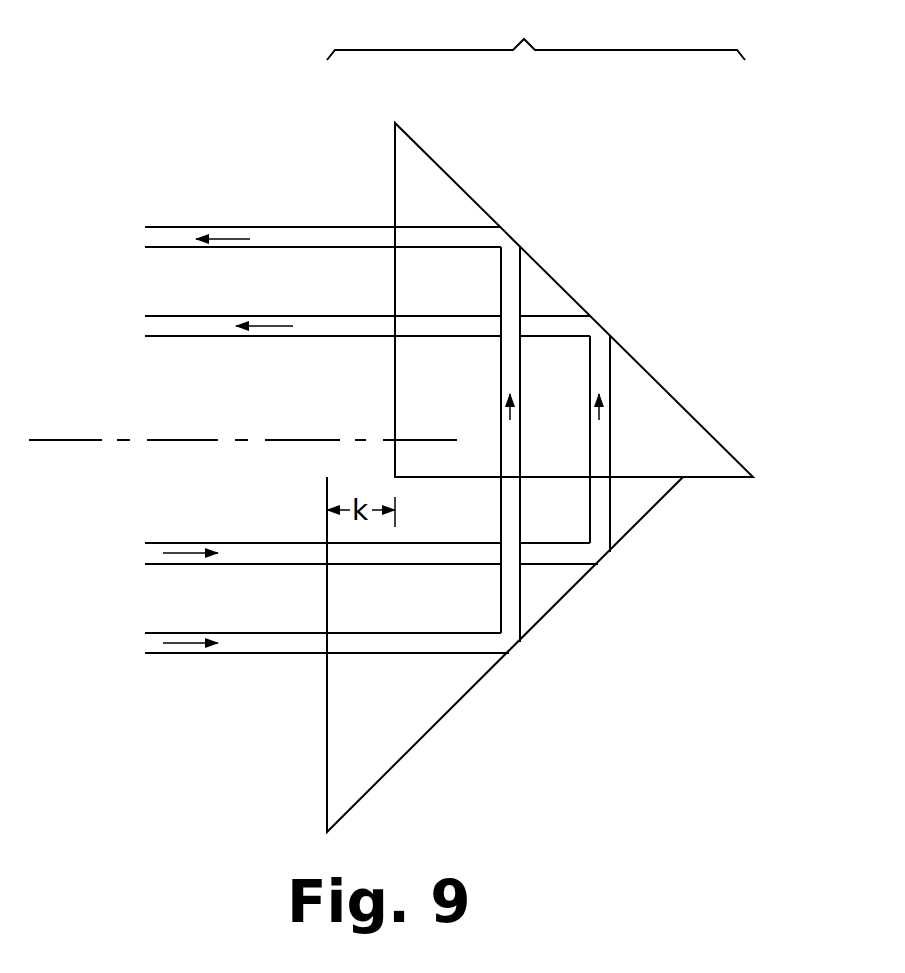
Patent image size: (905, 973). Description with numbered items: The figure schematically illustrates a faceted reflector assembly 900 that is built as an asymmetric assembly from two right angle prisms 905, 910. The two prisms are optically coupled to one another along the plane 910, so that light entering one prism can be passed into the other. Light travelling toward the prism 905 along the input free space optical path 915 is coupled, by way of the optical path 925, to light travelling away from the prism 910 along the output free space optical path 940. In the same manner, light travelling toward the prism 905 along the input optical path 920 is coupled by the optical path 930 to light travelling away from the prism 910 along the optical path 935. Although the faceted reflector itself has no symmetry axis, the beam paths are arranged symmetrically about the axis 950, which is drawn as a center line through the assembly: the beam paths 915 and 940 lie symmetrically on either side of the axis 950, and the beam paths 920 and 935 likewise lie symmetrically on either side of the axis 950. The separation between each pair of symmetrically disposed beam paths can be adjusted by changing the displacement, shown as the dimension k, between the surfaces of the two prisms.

The faceted reflector assembly 900 is at (536, 32).
The right angle prism 905 is at (653, 508).
The right angle prism 910 is at (697, 378).
The input free space optical path 915 is at (237, 655).
The input optical path 920 is at (237, 542).
The optical path 925 is at (522, 529).
The optical path 930 is at (612, 517).
The optical path 935 is at (238, 337).
The output free space optical path 940 is at (198, 227).
The axis 950 is at (80, 438).